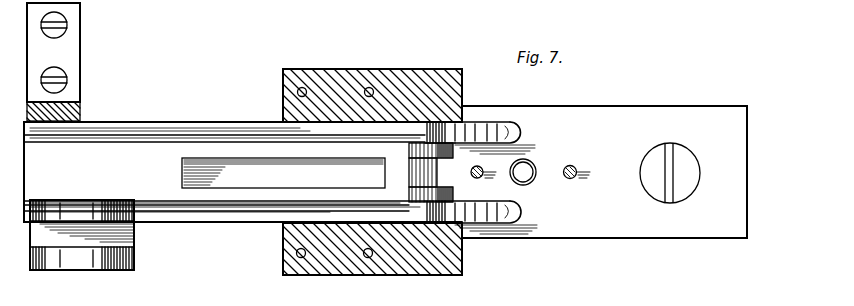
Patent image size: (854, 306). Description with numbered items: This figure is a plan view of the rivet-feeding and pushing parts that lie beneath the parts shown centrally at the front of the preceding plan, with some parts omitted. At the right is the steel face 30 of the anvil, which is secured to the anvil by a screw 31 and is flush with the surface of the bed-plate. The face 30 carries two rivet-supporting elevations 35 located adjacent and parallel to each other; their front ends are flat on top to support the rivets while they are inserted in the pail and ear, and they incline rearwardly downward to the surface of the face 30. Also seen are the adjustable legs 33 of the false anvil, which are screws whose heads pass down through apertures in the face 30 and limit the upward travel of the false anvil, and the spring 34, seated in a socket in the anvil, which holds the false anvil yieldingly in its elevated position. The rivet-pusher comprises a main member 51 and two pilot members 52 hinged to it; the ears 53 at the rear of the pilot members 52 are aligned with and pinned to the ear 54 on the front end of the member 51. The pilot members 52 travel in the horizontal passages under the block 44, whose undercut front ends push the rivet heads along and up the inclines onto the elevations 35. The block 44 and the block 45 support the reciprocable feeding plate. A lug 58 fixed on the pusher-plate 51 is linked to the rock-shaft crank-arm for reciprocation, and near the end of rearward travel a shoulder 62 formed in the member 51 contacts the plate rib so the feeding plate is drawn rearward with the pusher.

The steel face 30 is at (604, 172).
The screw 31 is at (670, 173).
The adjustable legs 33 is at (482, 173).
The spring 34 is at (533, 166).
The rivet-supporting elevations 35 is at (518, 132).
The block 44 is at (441, 68).
The block 45 is at (70, 60).
The main member of rivet-pusher 51 is at (243, 172).
The pilot members 52 is at (487, 118).
The ears 53 is at (410, 151).
The ear 54 is at (410, 173).
The lug 58 is at (133, 258).
The shoulder 62 is at (386, 175).